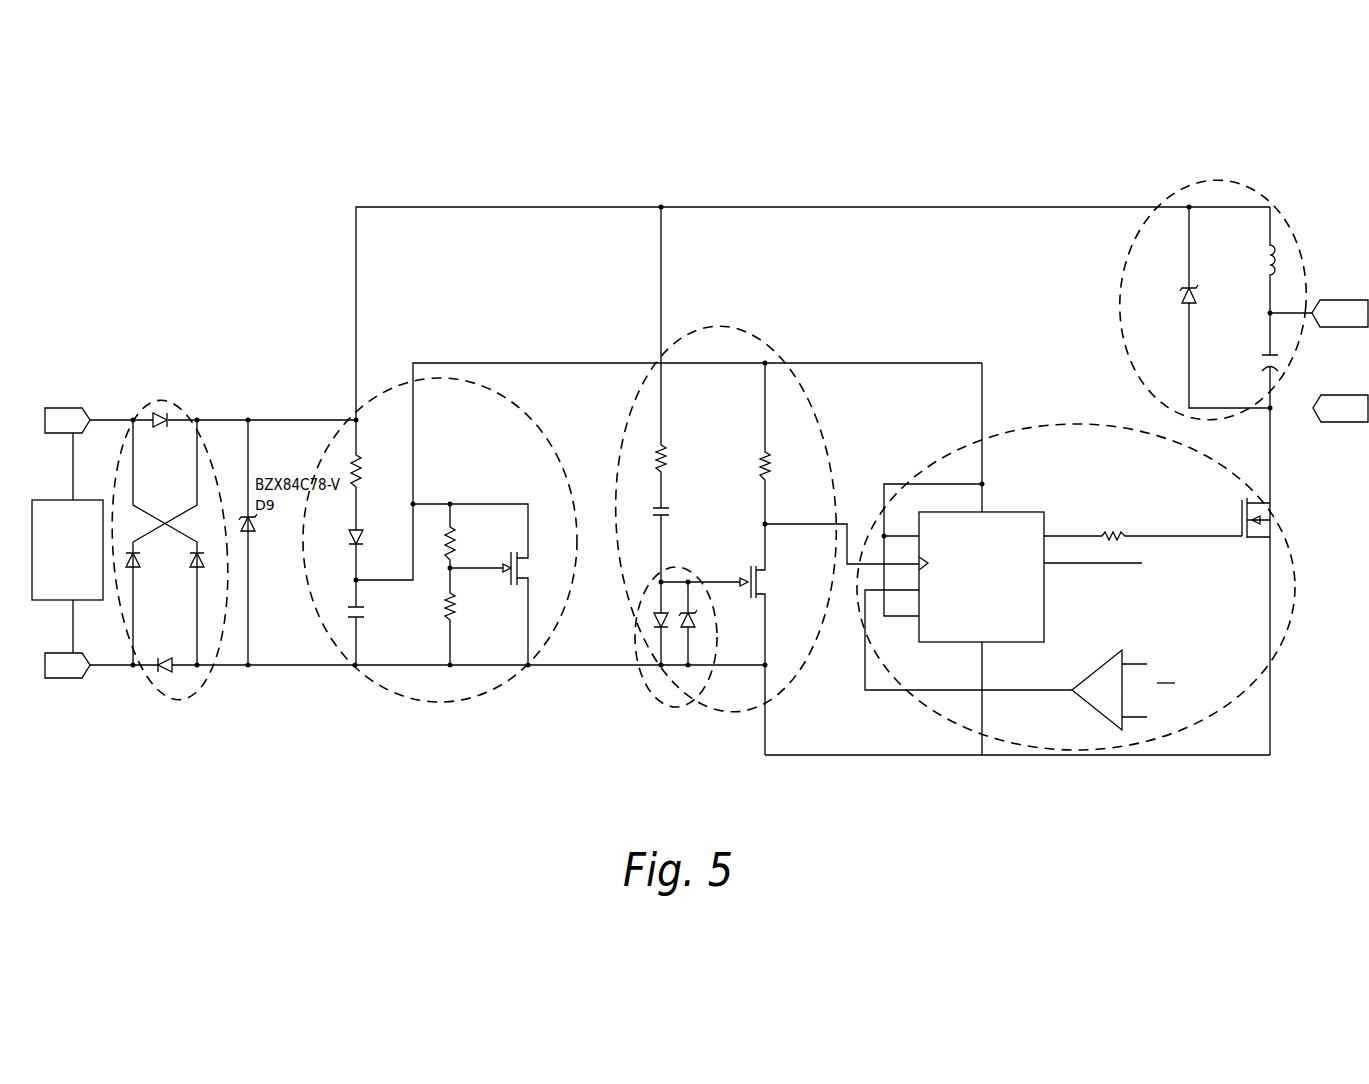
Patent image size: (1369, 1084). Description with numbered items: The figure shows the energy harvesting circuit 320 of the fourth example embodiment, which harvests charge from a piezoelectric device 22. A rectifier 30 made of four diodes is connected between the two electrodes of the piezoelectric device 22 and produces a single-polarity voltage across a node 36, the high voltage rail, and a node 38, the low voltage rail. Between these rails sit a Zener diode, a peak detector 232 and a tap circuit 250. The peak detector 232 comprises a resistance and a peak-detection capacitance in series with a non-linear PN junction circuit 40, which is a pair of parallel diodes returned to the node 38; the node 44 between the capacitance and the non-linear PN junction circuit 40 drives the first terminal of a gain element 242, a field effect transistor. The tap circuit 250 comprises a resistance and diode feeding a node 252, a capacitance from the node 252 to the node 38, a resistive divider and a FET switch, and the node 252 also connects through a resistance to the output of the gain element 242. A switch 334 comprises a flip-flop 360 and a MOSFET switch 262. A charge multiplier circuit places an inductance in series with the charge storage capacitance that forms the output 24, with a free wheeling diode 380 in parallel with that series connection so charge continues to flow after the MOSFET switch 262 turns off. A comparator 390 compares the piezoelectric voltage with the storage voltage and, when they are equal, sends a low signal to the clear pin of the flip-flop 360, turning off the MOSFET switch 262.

The piezoelectric device 22 is at (55, 500).
The output 24 is at (1289, 361).
The rectifier 30 is at (141, 698).
The node 36 is at (200, 418).
The node 38 is at (198, 666).
The non-linear PN junction circuit 40 is at (697, 672).
The node 44 is at (661, 582).
The peak detector 232 is at (735, 713).
The gain element 242 is at (746, 560).
The tap circuit 250 is at (416, 702).
The node 252 is at (355, 580).
The MOSFET switch 262 is at (1230, 519).
The energy harvesting circuit 320 is at (812, 197).
The switch 334 is at (1000, 424).
The flip-flop 360 is at (1017, 512).
The free wheeling diode 380 is at (1182, 295).
The comparator 390 is at (1093, 710).